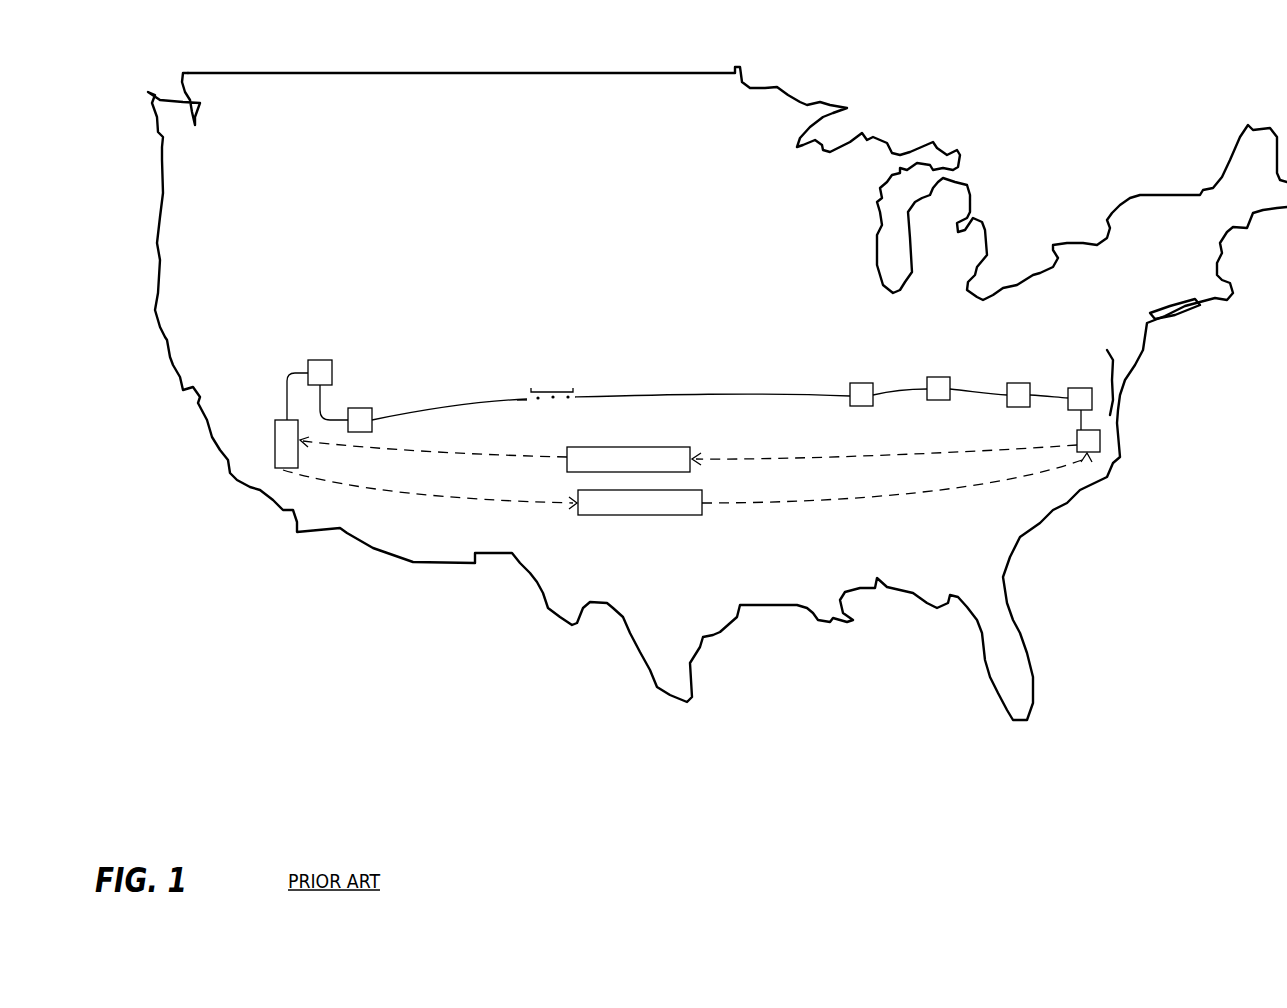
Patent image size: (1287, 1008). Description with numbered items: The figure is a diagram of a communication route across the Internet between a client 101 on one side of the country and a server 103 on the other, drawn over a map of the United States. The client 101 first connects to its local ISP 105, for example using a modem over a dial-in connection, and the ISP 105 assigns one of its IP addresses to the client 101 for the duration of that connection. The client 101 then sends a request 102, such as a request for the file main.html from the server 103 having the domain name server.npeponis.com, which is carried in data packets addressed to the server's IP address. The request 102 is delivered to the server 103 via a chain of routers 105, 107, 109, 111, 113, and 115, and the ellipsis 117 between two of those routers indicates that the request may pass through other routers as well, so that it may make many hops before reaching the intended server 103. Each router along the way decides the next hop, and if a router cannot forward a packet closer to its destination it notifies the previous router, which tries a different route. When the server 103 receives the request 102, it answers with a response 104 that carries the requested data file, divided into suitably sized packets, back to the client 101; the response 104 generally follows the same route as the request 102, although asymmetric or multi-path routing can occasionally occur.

The client 101 is at (1100, 443).
The request 102 is at (660, 447).
The server 103 is at (275, 447).
The response 104 is at (638, 515).
The local ISP 105 is at (1068, 403).
The router 107 is at (1023, 383).
The router 109 is at (947, 377).
The router 111 is at (862, 383).
The router 113 is at (363, 408).
The router 115 is at (320, 360).
The ellipsis 117 is at (552, 388).